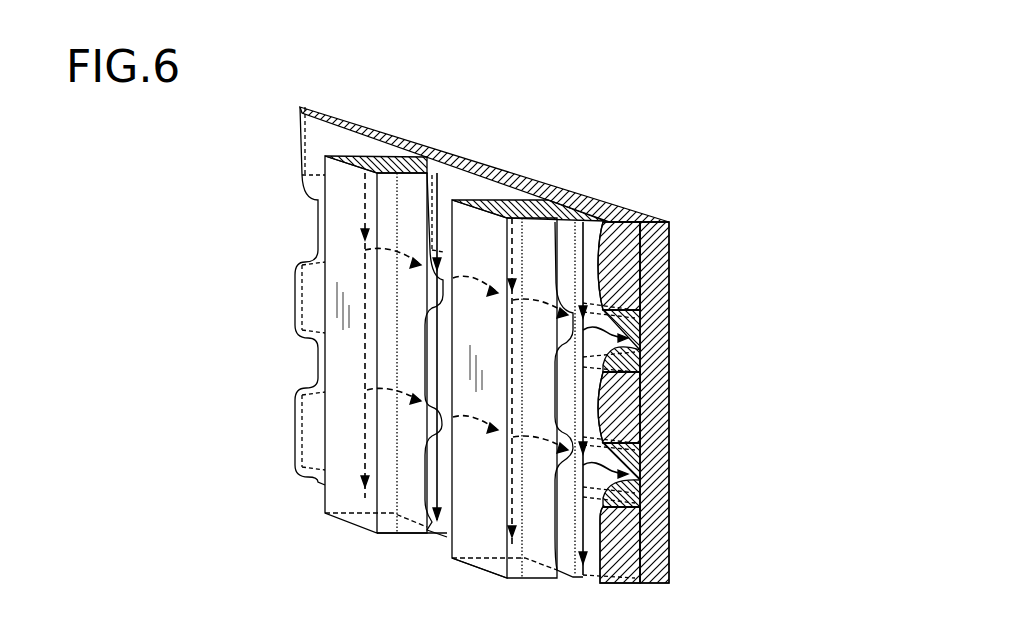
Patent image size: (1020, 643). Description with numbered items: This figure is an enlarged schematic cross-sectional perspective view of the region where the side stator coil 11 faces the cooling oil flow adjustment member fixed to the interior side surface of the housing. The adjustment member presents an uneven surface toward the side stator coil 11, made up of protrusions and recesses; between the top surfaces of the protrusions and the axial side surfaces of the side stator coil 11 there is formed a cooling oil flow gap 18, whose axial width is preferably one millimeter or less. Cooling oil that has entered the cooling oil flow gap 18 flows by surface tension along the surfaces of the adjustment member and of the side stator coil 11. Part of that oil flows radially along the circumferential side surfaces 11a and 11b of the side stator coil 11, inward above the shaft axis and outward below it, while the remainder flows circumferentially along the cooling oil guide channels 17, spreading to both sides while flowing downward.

The side stator coil 11 is at (340, 190).
The circumferential side surface of the side stator coil 11a is at (540, 543).
The circumferential side surface of the side stator coil 11b is at (463, 530).
The cooling oil guide channel 17 is at (713, 402).
The cooling oil flow gap 18 is at (420, 163).